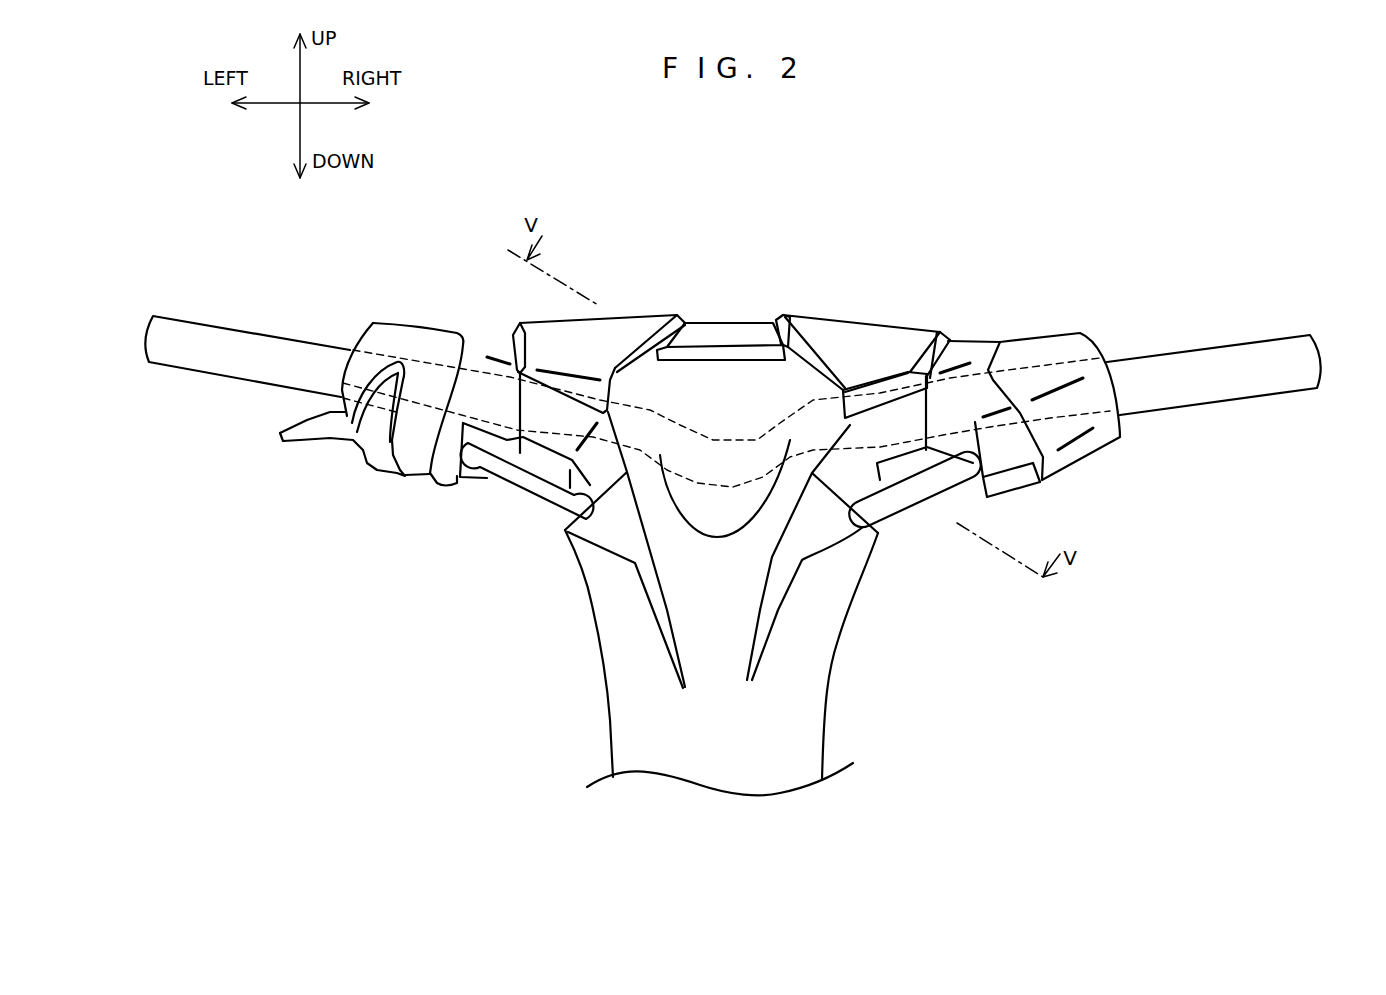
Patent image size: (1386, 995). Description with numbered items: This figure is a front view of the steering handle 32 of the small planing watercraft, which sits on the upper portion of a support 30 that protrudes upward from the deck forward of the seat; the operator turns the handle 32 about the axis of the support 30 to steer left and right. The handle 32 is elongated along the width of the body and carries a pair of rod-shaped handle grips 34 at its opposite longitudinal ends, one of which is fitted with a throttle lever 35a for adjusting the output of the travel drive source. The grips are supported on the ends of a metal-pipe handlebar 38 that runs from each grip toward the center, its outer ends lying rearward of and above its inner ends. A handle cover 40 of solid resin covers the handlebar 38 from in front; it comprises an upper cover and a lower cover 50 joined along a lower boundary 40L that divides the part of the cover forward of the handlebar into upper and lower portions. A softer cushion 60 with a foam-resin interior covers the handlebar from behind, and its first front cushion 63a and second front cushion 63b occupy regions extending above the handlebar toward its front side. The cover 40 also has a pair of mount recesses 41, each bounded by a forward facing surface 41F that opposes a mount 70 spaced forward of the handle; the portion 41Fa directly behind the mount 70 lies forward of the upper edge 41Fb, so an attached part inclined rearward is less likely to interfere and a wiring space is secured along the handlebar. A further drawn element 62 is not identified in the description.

The support 30 is at (827, 709).
The handle 32 is at (392, 293).
The handle grips 34 is at (216, 325).
The throttle lever 35a is at (296, 444).
The handlebar 38 is at (535, 452).
The handle cover 40 is at (721, 465).
The lower cover 50 is at (683, 395).
The lower boundary 40L is at (1013, 477).
The mount recesses 41 is at (553, 417).
The forward facing surface 41F is at (917, 430).
The portion of the forward facing surface 41Fa is at (936, 463).
The upper edge 41Fb is at (884, 397).
The cushion 60 is at (813, 303).
The center cross bar 62 is at (730, 330).
The first front cushion 63a is at (520, 323).
The second front cushion 63b is at (857, 321).
The mounts 70 is at (537, 503).